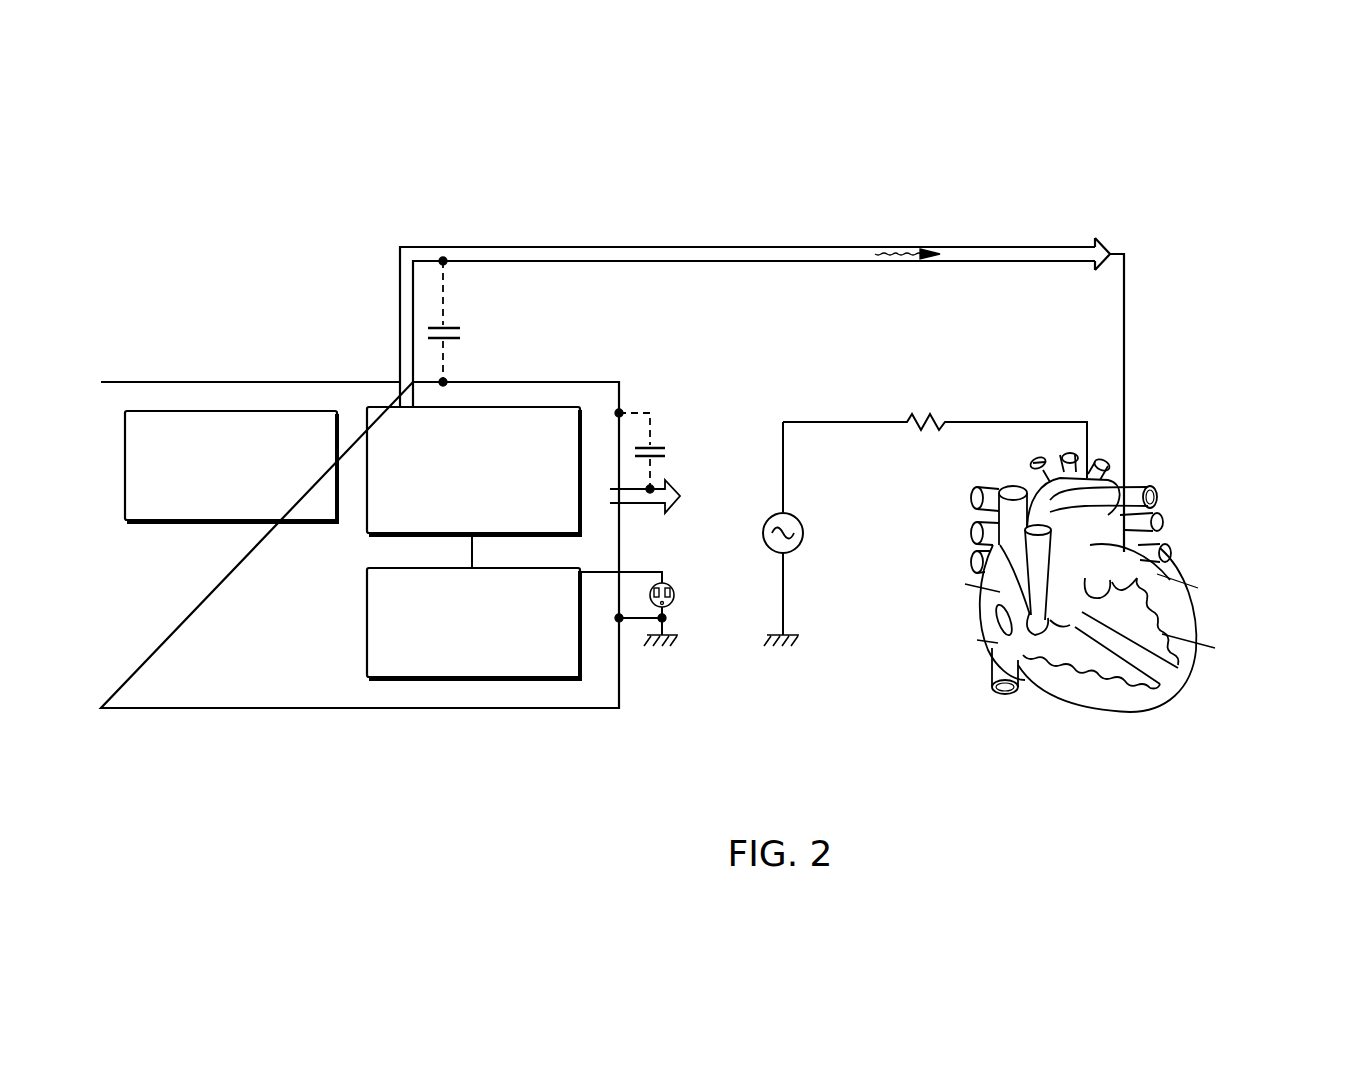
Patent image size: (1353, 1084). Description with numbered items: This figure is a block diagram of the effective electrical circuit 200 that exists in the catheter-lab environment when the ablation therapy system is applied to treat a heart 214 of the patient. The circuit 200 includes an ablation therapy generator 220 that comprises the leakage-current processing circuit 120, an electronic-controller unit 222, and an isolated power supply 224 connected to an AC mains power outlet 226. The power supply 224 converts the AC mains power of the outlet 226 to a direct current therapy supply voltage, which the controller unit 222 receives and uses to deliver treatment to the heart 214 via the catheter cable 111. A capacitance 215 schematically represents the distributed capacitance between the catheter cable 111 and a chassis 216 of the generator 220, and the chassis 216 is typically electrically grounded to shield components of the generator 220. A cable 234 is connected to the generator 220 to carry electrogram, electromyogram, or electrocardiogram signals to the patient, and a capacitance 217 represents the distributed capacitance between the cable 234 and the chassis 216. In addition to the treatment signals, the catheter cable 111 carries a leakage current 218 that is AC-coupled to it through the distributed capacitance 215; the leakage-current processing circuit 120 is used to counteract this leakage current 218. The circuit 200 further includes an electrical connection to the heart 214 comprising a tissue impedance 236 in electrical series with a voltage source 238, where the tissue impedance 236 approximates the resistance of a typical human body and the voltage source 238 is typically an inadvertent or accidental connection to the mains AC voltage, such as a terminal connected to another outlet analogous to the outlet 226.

The effective electrical circuit 200 is at (1158, 174).
The catheter cable 111 is at (668, 246).
The leakage current 218 is at (893, 250).
The capacitance 215 is at (477, 314).
The chassis 216 is at (550, 381).
The capacitance 217 is at (667, 433).
The cable 234 is at (655, 511).
The AC mains power outlet 226 is at (668, 590).
The voltage source 238 is at (800, 517).
The tissue impedance 236 is at (922, 414).
The heart 214 is at (1200, 702).
The ablation therapy generator 220 is at (201, 673).
The leakage-current processing circuit 120 is at (246, 505).
The electronic-controller unit 222 is at (492, 523).
The isolated power supply 224 is at (494, 662).